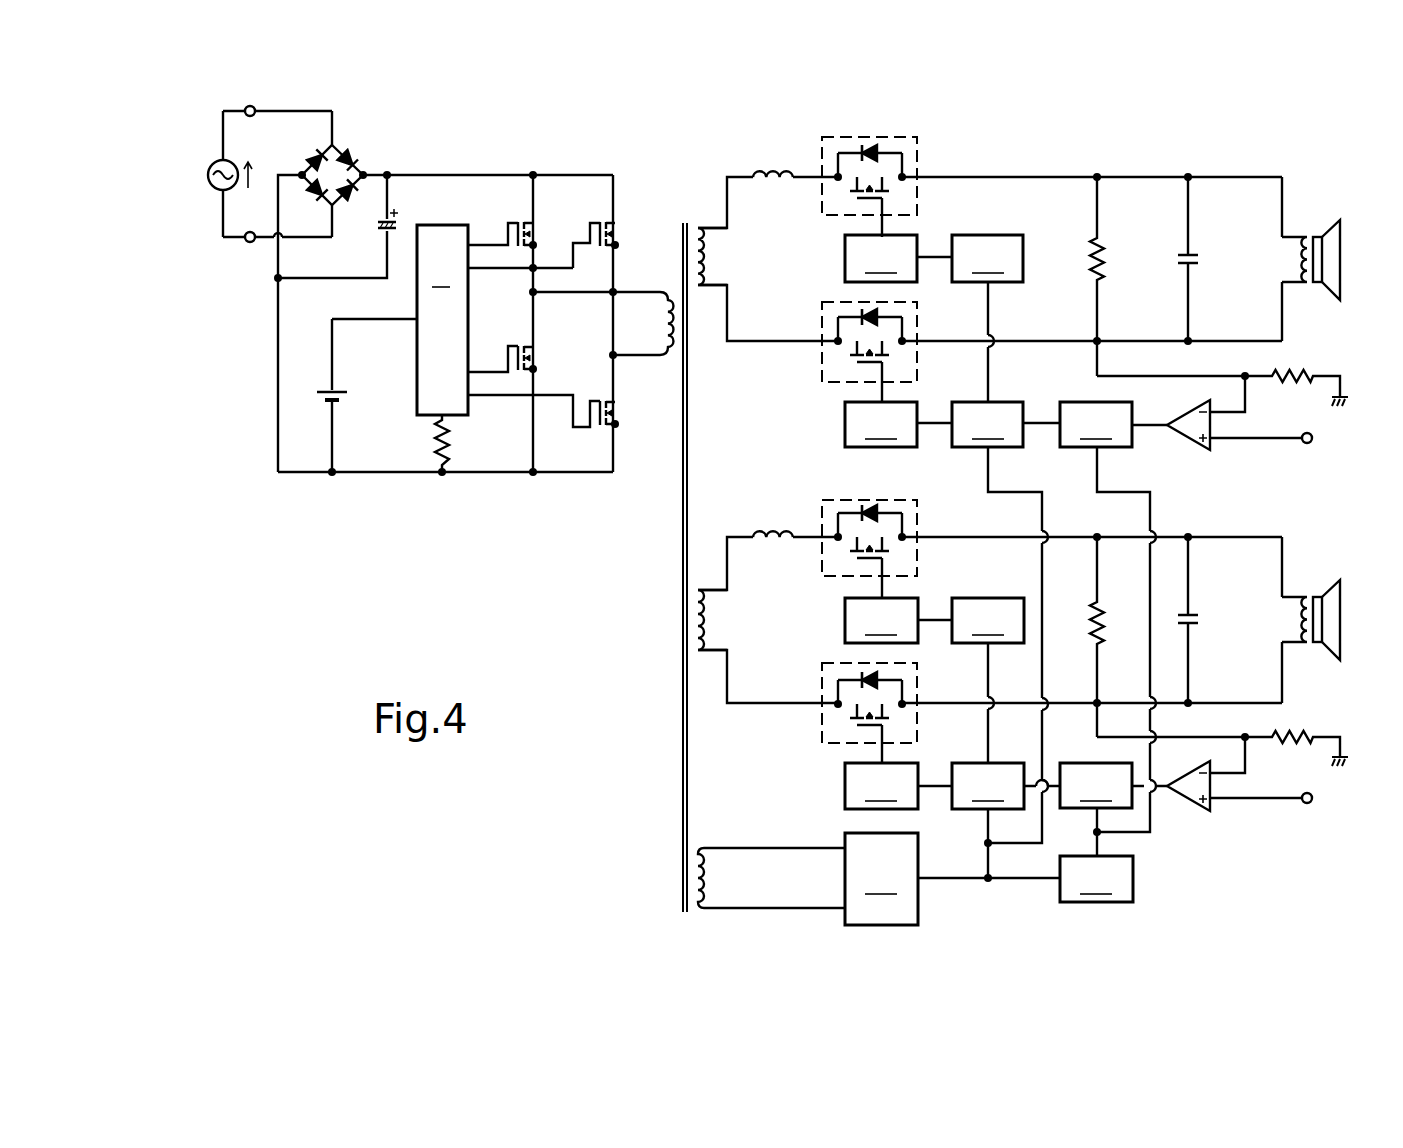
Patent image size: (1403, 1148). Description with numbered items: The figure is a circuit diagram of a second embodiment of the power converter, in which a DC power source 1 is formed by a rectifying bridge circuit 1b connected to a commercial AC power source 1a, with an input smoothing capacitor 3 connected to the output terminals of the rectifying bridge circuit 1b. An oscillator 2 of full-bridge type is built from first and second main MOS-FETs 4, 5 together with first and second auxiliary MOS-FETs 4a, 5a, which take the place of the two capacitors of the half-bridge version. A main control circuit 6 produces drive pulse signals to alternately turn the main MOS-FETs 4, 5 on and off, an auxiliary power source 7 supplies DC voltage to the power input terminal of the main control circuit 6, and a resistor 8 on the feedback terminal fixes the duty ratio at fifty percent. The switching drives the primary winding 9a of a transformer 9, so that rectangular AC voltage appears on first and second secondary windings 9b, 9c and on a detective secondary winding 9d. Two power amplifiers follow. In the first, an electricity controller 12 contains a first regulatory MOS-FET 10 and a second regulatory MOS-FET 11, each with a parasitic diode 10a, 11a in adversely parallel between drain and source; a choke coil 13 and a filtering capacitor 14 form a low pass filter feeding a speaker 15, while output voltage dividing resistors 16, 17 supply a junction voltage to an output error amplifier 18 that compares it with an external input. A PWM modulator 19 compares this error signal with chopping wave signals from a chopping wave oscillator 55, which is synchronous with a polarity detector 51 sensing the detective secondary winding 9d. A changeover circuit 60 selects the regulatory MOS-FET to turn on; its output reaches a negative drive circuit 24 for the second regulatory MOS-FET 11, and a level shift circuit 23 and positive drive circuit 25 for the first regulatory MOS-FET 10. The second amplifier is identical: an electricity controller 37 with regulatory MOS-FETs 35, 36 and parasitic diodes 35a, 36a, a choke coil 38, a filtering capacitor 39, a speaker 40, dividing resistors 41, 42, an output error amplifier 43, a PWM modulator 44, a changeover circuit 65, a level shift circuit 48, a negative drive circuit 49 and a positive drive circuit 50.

The DC power source 1 is at (328, 171).
The commercial AC power source 1a is at (217, 166).
The rectifying bridge circuit 1b is at (308, 161).
The oscillator 2 is at (448, 293).
The input smoothing capacitor 3 is at (381, 226).
The first main MOS-FET 4 is at (517, 346).
The first auxiliary MOS-FET 4a is at (603, 400).
The second main MOS-FET 5 is at (517, 224).
The second auxiliary MOS-FET 5a is at (599, 224).
The main control circuit 6 is at (442, 320).
The auxiliary power source 7 is at (326, 388).
The resistor 8 is at (449, 448).
The transformer 9 is at (729, 542).
The primary winding 9a is at (662, 324).
The first secondary winding 9b is at (703, 258).
The second secondary winding 9c is at (703, 620).
The detective secondary winding 9d is at (703, 876).
The first regulatory MOS-FET 10 is at (897, 170).
The first parasitic diode 10a is at (870, 150).
The second regulatory MOS-FET 11 is at (837, 346).
The second parasitic diode 11a is at (859, 320).
The electricity controller 12 is at (1215, 251).
The choke coil 13 is at (774, 172).
The filtering capacitor 14 is at (1199, 256).
The speaker 15 is at (1331, 222).
The output voltage dividing resistor 16 is at (1102, 256).
The output voltage dividing resistor 17 is at (1292, 384).
The output error amplifier 18 is at (1182, 413).
The PWM modulator 19 is at (1108, 619).
The level shift circuit 23 is at (970, 318).
The negative drive circuit 24 is at (881, 424).
The positive drive circuit 25 is at (881, 258).
The first regulatory MOS-FET 35 is at (898, 530).
The first parasitic diode 35a is at (870, 510).
The second regulatory MOS-FET 36 is at (837, 708).
The second parasitic diode 36a is at (859, 681).
The electricity controller 37 is at (1215, 612).
The choke coil 38 is at (772, 530).
The filtering capacitor 39 is at (1198, 620).
The speaker 40 is at (1331, 582).
The output voltage dividing resistor 41 is at (1100, 620).
The output voltage dividing resistor 42 is at (1290, 746).
The output error amplifier 43 is at (1190, 805).
The PWM modulator 44 is at (1096, 809).
The level shift circuit 48 is at (971, 680).
The negative drive circuit 49 is at (881, 786).
The positive drive circuit 50 is at (881, 620).
The polarity detector 51 is at (952, 879).
The chopping wave oscillator 55 is at (1096, 879).
The changeover circuit 60 is at (988, 624).
The changeover circuit 65 is at (989, 820).